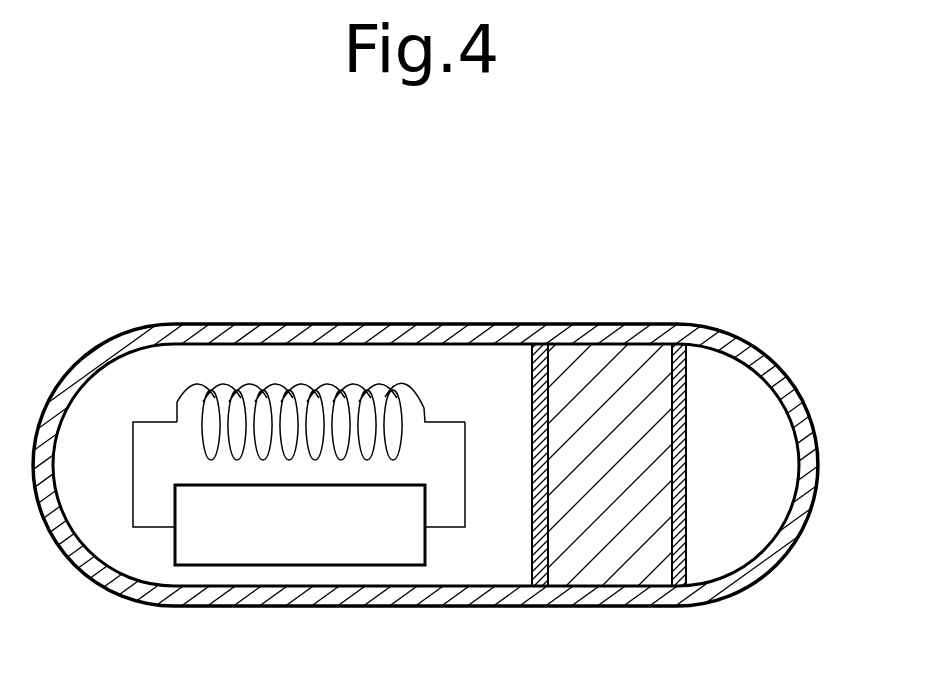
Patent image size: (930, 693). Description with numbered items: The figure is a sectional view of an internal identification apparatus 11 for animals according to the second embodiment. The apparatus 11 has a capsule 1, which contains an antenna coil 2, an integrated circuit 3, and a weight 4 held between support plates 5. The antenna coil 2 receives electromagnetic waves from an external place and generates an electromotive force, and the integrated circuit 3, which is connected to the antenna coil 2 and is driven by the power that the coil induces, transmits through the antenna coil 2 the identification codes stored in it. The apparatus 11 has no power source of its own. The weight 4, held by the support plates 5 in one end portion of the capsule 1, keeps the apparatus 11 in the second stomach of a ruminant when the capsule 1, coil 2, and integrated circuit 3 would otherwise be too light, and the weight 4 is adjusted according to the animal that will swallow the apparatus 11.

The capsule 1 is at (249, 326).
The antenna coil 2 is at (264, 385).
The integrated circuit 3 is at (340, 566).
The weight 4 is at (596, 348).
The support plates 5 is at (531, 424).
The internal identification apparatus 11 is at (465, 452).